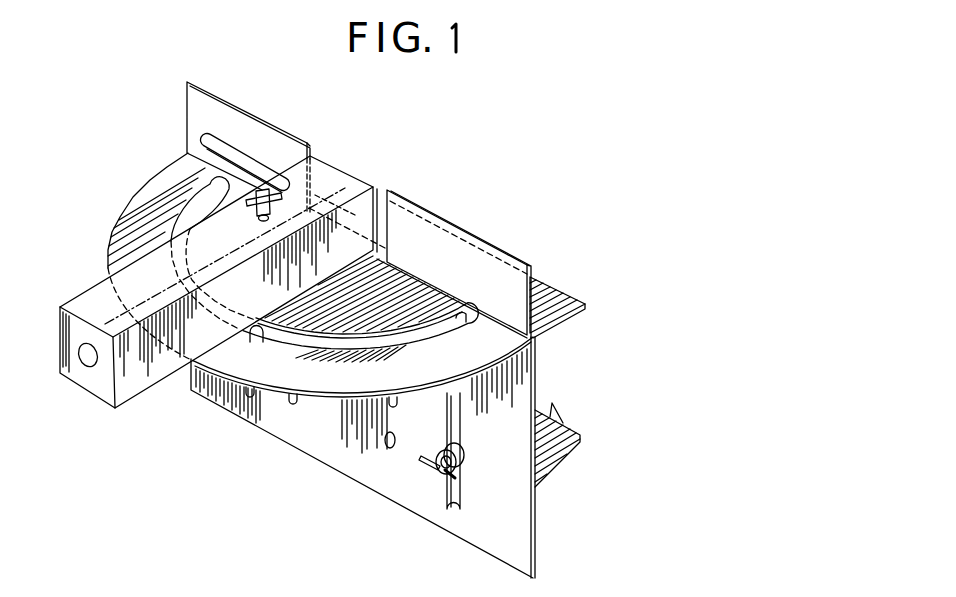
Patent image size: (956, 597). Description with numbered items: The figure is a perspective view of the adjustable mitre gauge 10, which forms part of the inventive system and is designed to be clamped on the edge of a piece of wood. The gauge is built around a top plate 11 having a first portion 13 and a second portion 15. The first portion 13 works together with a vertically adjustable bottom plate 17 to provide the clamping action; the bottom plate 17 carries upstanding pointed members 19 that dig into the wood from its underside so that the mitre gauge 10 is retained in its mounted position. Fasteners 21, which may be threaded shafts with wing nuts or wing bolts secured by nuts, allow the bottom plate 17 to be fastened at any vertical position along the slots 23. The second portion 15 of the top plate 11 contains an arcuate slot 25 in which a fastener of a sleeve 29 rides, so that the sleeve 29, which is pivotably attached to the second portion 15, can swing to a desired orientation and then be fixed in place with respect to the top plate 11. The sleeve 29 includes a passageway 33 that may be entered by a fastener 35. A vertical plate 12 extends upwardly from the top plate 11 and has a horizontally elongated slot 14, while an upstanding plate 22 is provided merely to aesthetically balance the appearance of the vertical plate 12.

The adjustable mitre gauge 10 is at (489, 132).
The top plate 11 is at (525, 311).
The vertical plate 12 is at (223, 123).
The first portion 13 is at (483, 264).
The horizontally elongated slot 14 is at (204, 139).
The second portion 15 is at (324, 263).
The bottom plate 17 is at (581, 431).
The upstanding pointed members 19 is at (556, 408).
The fasteners 21 is at (462, 458).
The upstanding plate 22 is at (454, 264).
The slots 23 is at (457, 410).
The arcuate slot 25 is at (359, 457).
The sleeve 29 is at (207, 296).
The passageway 33 is at (83, 368).
The fastener 35 is at (247, 205).